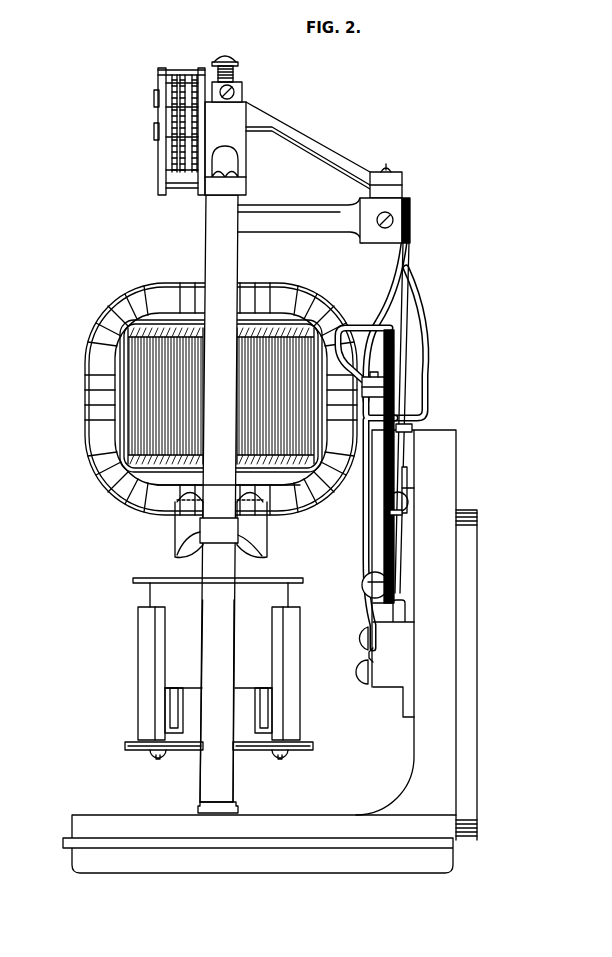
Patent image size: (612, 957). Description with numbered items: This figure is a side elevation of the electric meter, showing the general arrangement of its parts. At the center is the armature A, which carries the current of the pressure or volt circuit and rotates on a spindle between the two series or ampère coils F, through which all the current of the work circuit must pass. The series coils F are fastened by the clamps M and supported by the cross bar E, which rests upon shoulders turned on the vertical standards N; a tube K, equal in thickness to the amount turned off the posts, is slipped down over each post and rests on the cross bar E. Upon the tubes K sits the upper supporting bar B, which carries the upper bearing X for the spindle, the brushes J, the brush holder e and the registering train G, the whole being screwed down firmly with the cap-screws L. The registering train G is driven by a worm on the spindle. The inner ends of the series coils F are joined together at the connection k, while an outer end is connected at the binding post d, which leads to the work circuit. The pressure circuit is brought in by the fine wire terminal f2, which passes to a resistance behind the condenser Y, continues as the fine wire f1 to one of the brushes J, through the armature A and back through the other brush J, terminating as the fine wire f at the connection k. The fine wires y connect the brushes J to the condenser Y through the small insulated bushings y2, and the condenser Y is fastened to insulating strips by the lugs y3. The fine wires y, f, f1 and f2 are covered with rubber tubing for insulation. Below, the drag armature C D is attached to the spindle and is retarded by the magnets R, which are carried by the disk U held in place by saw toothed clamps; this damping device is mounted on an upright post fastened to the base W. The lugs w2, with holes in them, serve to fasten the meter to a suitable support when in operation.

The series coils F is at (105, 406).
The armature A is at (172, 452).
The fine wire f is at (390, 294).
The fine wire f1 is at (423, 345).
The fine wire terminal f2 is at (361, 538).
The series coils connection k is at (364, 393).
The tube K is at (219, 498).
The vertical standards N is at (217, 701).
The upper supporting bar B is at (225, 148).
The cap-screws L is at (226, 158).
The bearing X is at (233, 70).
The registering train G is at (158, 157).
The brush holder e is at (303, 136).
The brushes J is at (340, 217).
The fine wires y is at (410, 265).
The condenser Y is at (406, 622).
The insulated bushings y2 is at (411, 430).
The lugs y3 is at (408, 508).
The binding post d is at (385, 658).
The lugs w2 is at (467, 681).
The base W is at (259, 844).
The clamps M is at (176, 513).
The cross bar E is at (219, 537).
The drag armature D is at (293, 580).
The drag armature C is at (219, 635).
The magnets R is at (146, 672).
The disk U is at (126, 748).